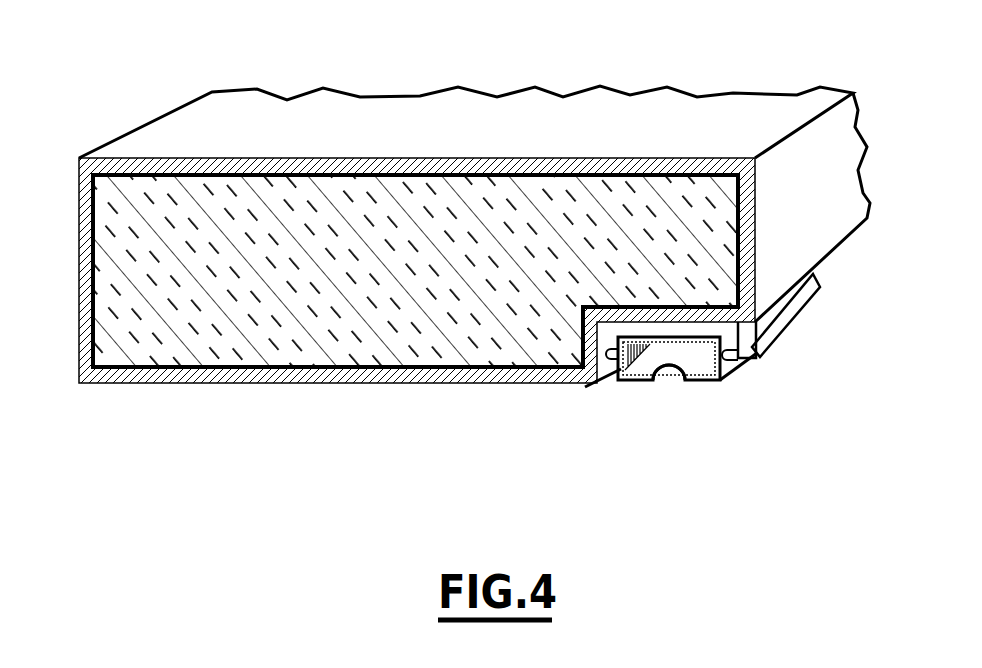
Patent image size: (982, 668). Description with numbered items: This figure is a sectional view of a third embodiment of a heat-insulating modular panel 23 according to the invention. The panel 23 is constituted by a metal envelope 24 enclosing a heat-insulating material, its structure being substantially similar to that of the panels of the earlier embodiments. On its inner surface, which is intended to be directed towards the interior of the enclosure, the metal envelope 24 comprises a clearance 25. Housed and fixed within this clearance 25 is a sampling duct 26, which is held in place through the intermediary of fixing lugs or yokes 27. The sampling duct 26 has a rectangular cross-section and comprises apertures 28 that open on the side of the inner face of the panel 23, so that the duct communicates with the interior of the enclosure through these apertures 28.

The heat-insulating panel 23 is at (450, 137).
The metal envelope 24 is at (198, 368).
The clearance 25 is at (612, 335).
The sampling duct 26 is at (710, 378).
The fixing lug 27 is at (753, 357).
The aperture 28 is at (668, 372).